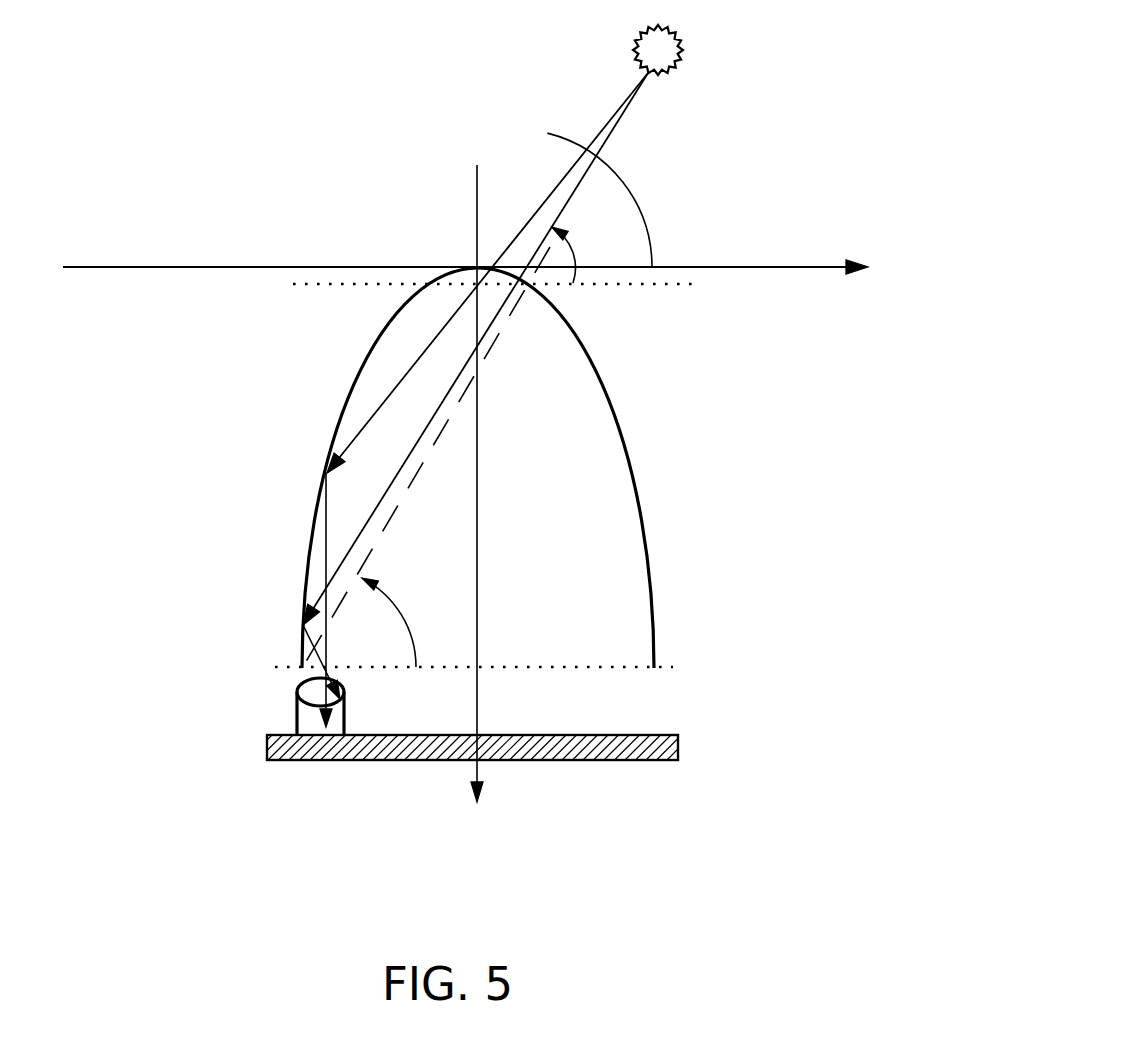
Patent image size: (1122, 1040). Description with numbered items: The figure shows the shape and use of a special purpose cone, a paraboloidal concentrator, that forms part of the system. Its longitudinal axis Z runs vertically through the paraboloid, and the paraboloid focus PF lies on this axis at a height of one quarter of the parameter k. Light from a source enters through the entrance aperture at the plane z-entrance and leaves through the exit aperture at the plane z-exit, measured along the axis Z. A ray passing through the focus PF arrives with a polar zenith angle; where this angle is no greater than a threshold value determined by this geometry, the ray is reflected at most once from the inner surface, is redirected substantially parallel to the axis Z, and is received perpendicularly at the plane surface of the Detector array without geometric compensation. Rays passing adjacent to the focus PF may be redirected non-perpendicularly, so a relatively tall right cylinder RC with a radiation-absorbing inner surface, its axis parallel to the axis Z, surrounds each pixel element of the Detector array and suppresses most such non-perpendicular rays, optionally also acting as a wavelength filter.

The right cylinder RC is at (272, 697).
The paraboloid focus PF is at (428, 456).
The longitudinal z-axis Z is at (536, 695).
The entrance aperture z-entrance is at (554, 301).
The exit aperture z-exit is at (522, 662).
The detector array Detector array is at (577, 748).